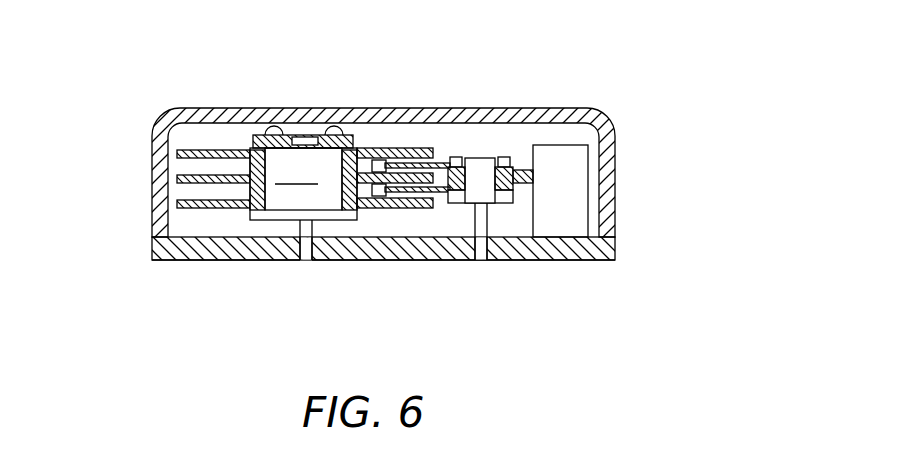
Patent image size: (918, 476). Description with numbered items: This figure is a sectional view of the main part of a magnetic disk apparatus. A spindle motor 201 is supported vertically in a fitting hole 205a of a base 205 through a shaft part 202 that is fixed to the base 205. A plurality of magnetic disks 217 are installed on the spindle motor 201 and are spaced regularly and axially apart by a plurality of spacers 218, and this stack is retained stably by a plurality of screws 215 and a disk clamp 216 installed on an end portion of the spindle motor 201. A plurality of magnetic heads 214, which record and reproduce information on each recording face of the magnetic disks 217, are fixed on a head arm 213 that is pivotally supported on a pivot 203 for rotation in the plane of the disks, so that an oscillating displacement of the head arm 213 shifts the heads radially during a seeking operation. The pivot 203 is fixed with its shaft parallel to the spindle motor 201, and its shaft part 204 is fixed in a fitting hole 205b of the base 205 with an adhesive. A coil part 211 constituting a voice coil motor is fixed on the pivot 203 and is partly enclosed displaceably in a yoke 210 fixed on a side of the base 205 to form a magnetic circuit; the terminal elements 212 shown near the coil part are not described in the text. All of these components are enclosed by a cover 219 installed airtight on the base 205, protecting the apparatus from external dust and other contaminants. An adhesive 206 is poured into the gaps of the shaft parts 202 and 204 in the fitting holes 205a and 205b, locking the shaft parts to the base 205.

The spindle motor 201 is at (303, 184).
The shaft part 202 is at (307, 262).
The pivot 203 is at (482, 157).
The shaft part 204 is at (478, 262).
The base 205 is at (170, 262).
The fitting hole 205a is at (283, 262).
The fitting hole 205b is at (511, 262).
The adhesive 206 is at (340, 262).
The yoke 210 is at (580, 157).
The coil part 211 is at (522, 168).
The terminal 212 is at (453, 157).
The head arm 213 is at (417, 157).
The magnetic head 214 is at (372, 150).
The screw 215 is at (288, 137).
The disk clamp 216 is at (250, 140).
The magnetic disk 217 is at (178, 150).
The spacer 218 is at (253, 187).
The cover 219 is at (607, 178).